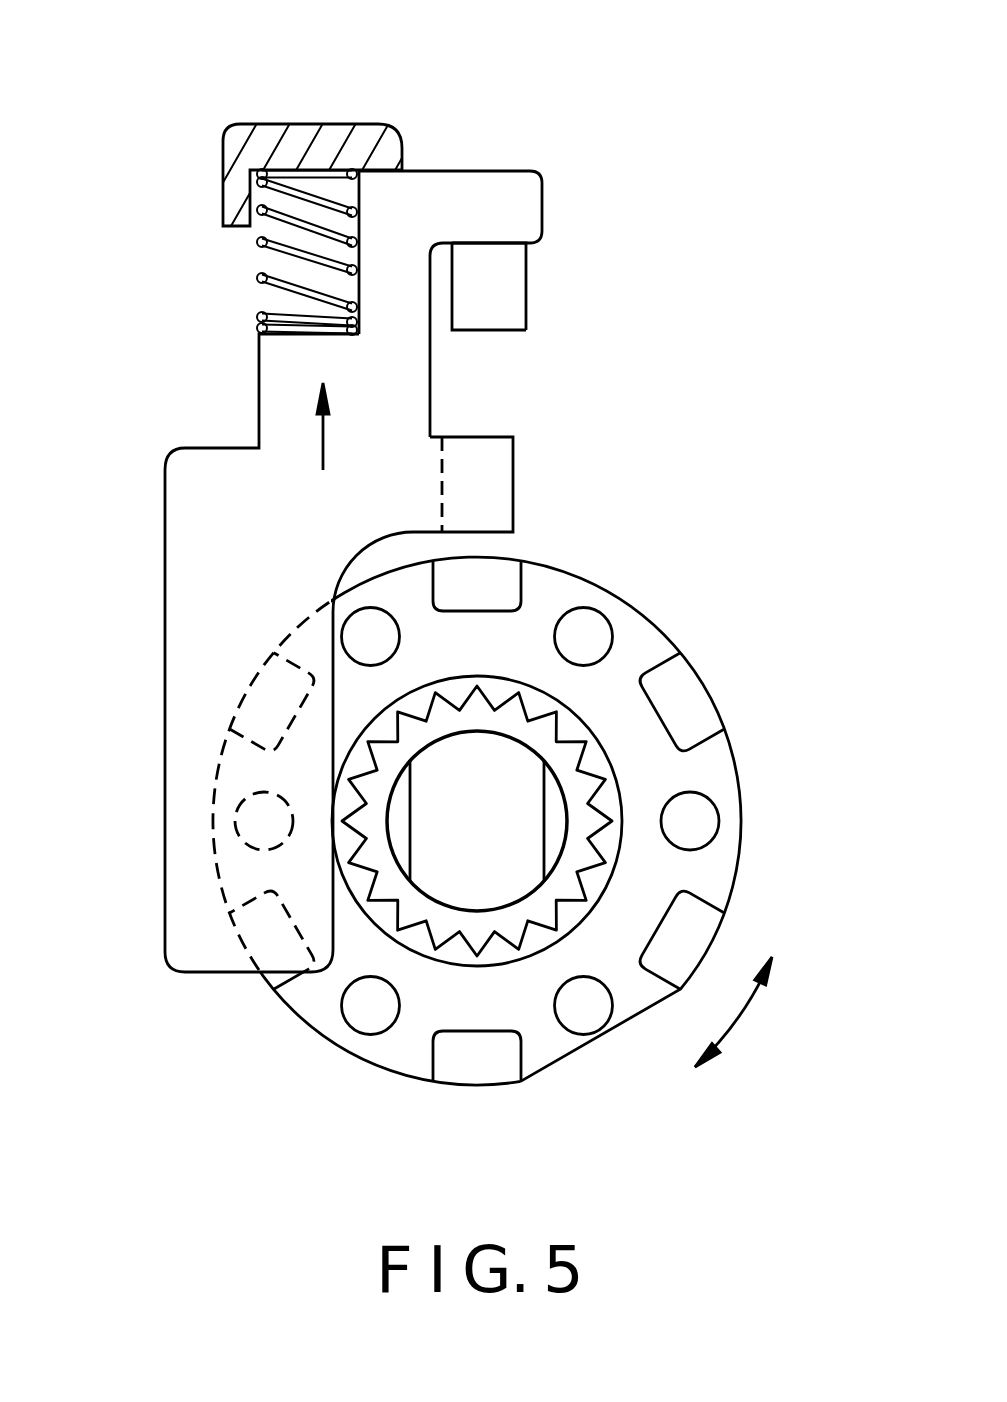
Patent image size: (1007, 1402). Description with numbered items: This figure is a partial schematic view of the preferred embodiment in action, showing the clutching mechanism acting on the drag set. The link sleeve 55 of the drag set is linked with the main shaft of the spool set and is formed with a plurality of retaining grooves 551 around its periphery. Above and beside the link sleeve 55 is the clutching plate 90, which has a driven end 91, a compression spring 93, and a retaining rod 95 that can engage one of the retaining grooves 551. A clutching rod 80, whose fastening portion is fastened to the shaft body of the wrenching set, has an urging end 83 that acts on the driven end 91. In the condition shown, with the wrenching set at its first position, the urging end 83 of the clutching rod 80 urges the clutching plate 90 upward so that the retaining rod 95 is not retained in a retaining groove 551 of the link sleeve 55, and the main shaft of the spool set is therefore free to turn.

The link sleeve 55 is at (740, 860).
The retaining groove 551 is at (500, 590).
The clutching rod 80 is at (526, 262).
The urging end 83 is at (505, 303).
The clutching plate 90 is at (165, 587).
The driven end 91 is at (498, 185).
The compression spring 93 is at (265, 248).
The retaining rod 95 is at (497, 497).